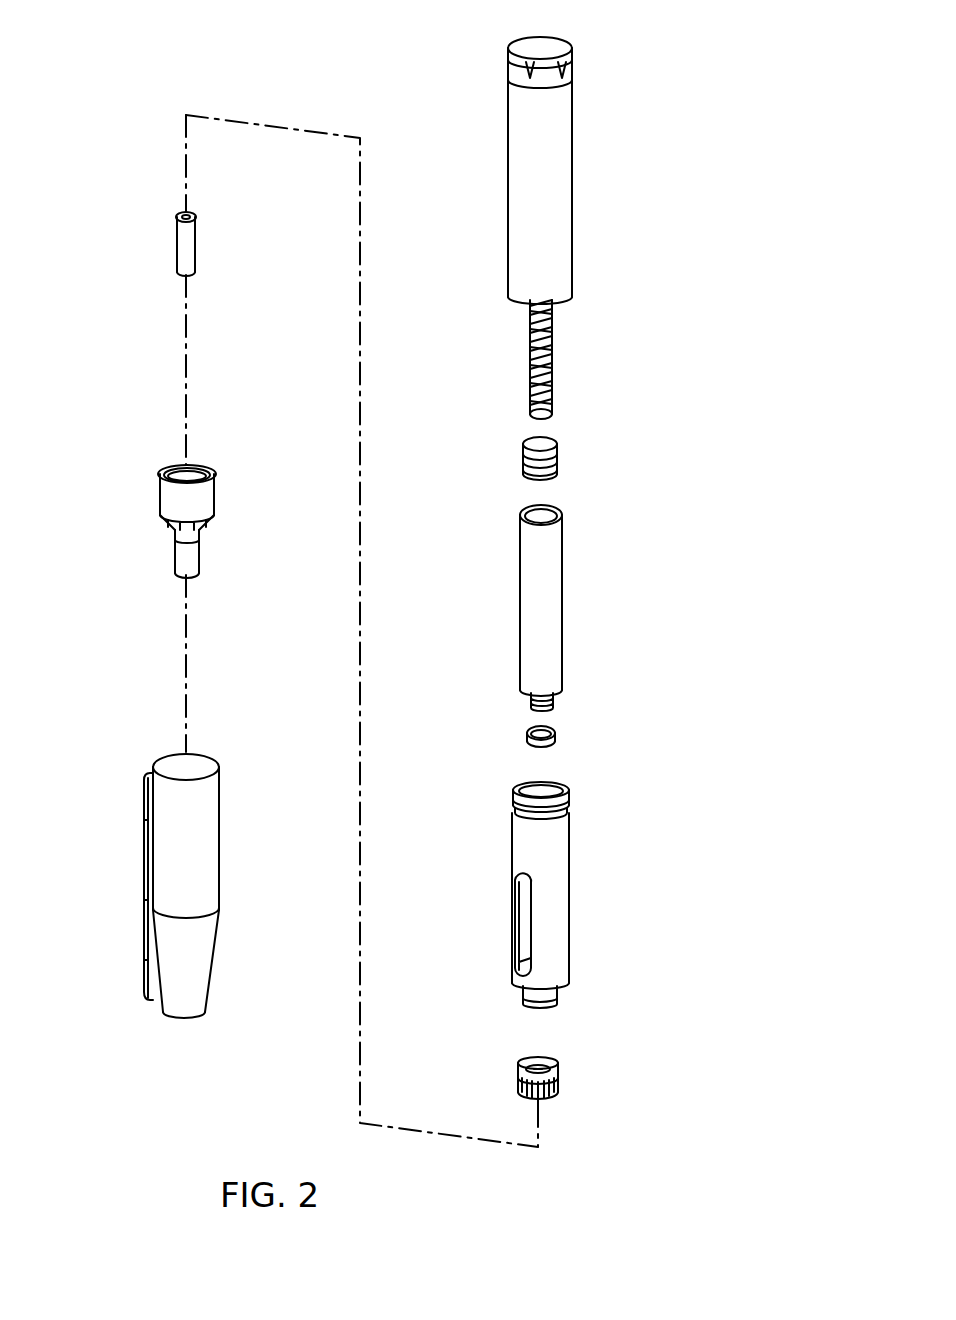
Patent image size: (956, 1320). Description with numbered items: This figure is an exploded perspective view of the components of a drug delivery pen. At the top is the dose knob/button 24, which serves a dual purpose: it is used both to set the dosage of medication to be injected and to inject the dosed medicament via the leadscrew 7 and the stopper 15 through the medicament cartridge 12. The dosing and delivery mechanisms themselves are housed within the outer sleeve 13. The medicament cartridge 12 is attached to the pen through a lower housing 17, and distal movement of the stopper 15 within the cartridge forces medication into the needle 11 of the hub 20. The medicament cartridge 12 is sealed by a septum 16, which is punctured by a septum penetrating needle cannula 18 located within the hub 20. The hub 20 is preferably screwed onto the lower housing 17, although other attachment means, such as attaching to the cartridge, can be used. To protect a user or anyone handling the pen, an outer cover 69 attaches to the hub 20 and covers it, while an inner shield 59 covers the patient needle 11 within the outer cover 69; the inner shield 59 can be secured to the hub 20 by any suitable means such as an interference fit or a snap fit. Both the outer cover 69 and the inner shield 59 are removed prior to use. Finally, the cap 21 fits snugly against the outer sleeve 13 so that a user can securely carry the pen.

The dose knob/button 24 is at (574, 70).
The outer sleeve 13 is at (575, 232).
The leadscrew 7 is at (553, 366).
The stopper 15 is at (559, 460).
The medicament cartridge 12 is at (564, 603).
The septum 16 is at (557, 731).
The lower housing 17 is at (570, 907).
The septum penetrating needle cannula 18 is at (538, 1072).
The hub 20 is at (560, 1073).
The needle 11 is at (542, 1115).
The inner shield 59 is at (176, 250).
The outer cover 69 is at (158, 500).
The cap 21 is at (222, 866).